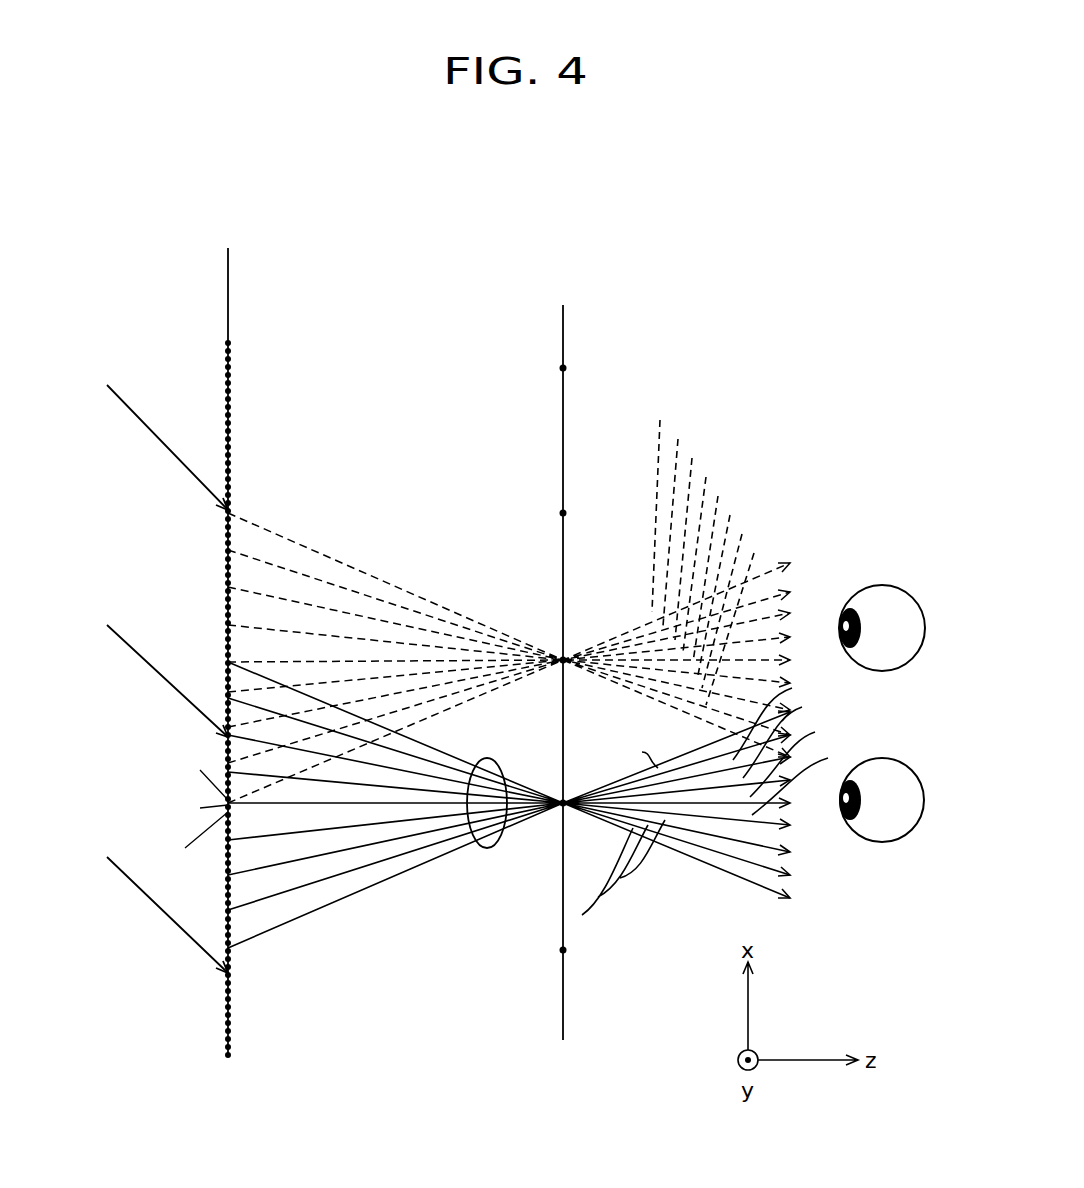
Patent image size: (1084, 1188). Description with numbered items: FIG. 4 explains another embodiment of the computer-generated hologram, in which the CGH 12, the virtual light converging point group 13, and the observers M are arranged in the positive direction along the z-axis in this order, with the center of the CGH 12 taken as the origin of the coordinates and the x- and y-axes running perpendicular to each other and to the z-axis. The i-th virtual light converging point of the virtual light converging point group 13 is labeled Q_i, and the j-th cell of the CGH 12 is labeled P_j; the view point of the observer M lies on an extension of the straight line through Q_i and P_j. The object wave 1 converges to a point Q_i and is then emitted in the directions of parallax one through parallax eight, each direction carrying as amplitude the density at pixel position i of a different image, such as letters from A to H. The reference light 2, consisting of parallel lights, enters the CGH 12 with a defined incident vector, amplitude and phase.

The object wave 1 is at (487, 850).
The reference light 2 is at (106, 388).
The CGH 12 is at (216, 669).
The virtual light converging point group 13 is at (560, 725).
The observer M is at (874, 729).